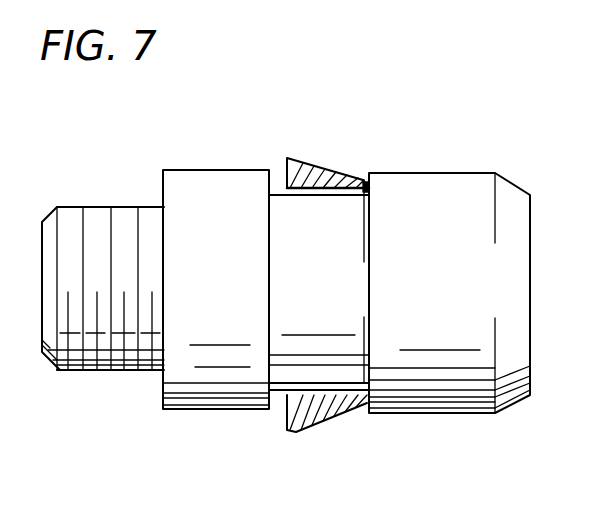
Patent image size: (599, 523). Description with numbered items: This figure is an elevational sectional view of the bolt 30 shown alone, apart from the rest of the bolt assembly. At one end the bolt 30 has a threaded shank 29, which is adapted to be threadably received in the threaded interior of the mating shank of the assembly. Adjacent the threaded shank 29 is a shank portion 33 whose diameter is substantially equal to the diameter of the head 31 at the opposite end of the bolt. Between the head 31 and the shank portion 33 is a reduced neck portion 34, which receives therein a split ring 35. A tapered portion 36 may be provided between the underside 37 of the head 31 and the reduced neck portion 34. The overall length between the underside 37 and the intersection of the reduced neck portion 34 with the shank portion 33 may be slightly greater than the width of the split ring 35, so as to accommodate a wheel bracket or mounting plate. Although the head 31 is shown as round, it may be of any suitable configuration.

The threaded shank 29 is at (87, 345).
The bolt 30 is at (286, 293).
The head 31 is at (471, 173).
The shank portion 33 is at (207, 170).
The reduced neck portion 34 is at (337, 277).
The split ring 35 is at (320, 165).
The tapered portion 36 is at (361, 182).
The underside 37 is at (367, 404).